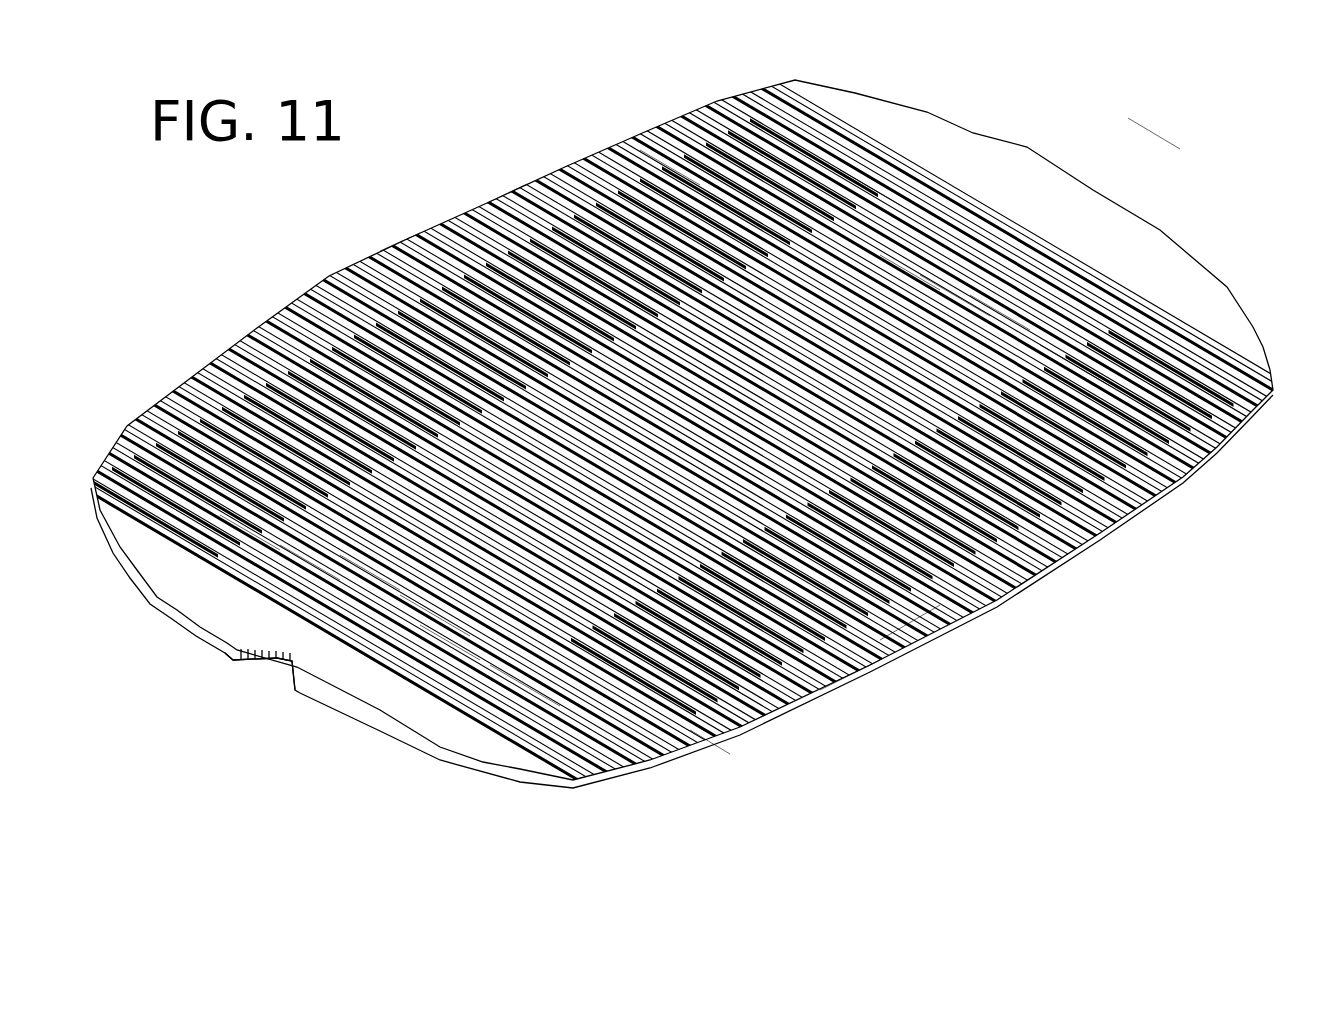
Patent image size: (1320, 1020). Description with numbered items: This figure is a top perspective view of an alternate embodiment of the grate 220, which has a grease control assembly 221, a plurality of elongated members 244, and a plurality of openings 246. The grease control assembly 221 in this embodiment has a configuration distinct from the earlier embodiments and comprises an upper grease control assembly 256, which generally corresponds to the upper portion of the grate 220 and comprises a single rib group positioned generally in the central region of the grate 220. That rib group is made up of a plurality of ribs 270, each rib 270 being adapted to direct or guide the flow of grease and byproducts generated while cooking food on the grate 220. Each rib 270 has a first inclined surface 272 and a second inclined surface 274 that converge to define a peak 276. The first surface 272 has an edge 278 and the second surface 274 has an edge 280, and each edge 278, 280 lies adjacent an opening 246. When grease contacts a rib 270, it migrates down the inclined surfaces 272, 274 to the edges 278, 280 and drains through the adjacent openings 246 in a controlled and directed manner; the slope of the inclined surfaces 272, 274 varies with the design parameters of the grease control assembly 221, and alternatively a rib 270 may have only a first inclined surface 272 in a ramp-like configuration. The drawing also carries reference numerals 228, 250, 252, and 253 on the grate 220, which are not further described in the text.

The grate 220 is at (1128, 118).
The grease control assembly 221 is at (887, 212).
The peripheral rim 228 is at (1003, 605).
The elongated members 244 is at (920, 640).
The openings 246 is at (680, 150).
The first edge portion 250 is at (496, 200).
The second edge portion 252 is at (848, 685).
The bar end 253 is at (396, 247).
The upper grease control assembly 256 is at (362, 675).
The rib 270 is at (358, 563).
The first inclined surface 272 is at (900, 263).
The second inclined surface 274 is at (990, 302).
The peak 276 is at (945, 285).
The edge 278 is at (868, 190).
The edge 280 is at (1063, 360).